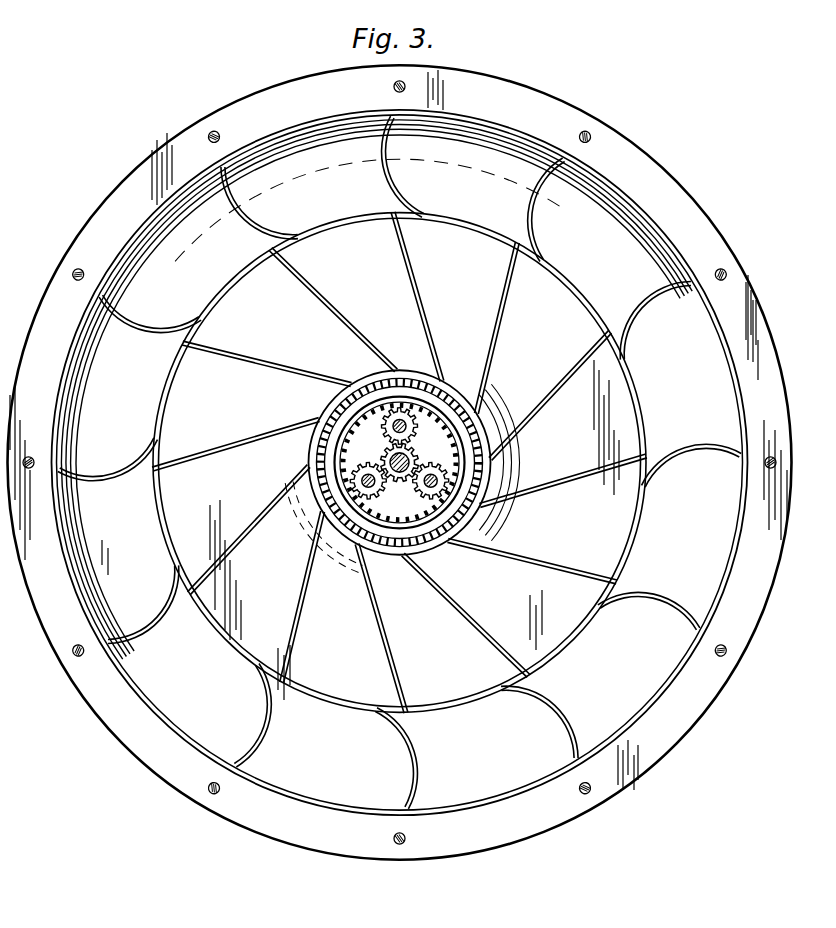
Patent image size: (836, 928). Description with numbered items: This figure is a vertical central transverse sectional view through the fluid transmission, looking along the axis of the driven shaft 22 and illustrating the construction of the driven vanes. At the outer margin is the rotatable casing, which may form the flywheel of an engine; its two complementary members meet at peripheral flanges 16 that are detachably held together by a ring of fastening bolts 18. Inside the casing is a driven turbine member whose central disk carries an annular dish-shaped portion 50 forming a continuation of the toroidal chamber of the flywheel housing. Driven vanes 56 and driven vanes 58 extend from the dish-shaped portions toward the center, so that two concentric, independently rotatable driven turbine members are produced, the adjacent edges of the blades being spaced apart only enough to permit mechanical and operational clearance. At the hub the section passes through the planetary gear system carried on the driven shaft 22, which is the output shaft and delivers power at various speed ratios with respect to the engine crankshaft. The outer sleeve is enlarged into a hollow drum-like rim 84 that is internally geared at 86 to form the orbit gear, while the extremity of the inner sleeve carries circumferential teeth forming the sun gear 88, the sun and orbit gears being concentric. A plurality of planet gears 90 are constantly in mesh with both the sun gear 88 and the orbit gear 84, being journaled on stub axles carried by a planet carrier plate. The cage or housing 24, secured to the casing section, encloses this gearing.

The peripheral flanges 16 is at (318, 836).
The fastening bolts 18 is at (210, 793).
The driven shaft 22 is at (367, 477).
The cage or housing 24 is at (478, 434).
The annular dish-shaped portion 50 is at (487, 778).
The driven vanes 56 is at (145, 578).
The driven vanes 58 is at (247, 543).
The drum-like flange or rim 84 is at (367, 418).
The internal gearing 86 is at (433, 427).
The sun gear 88 is at (401, 481).
The planet gears 90 is at (391, 434).